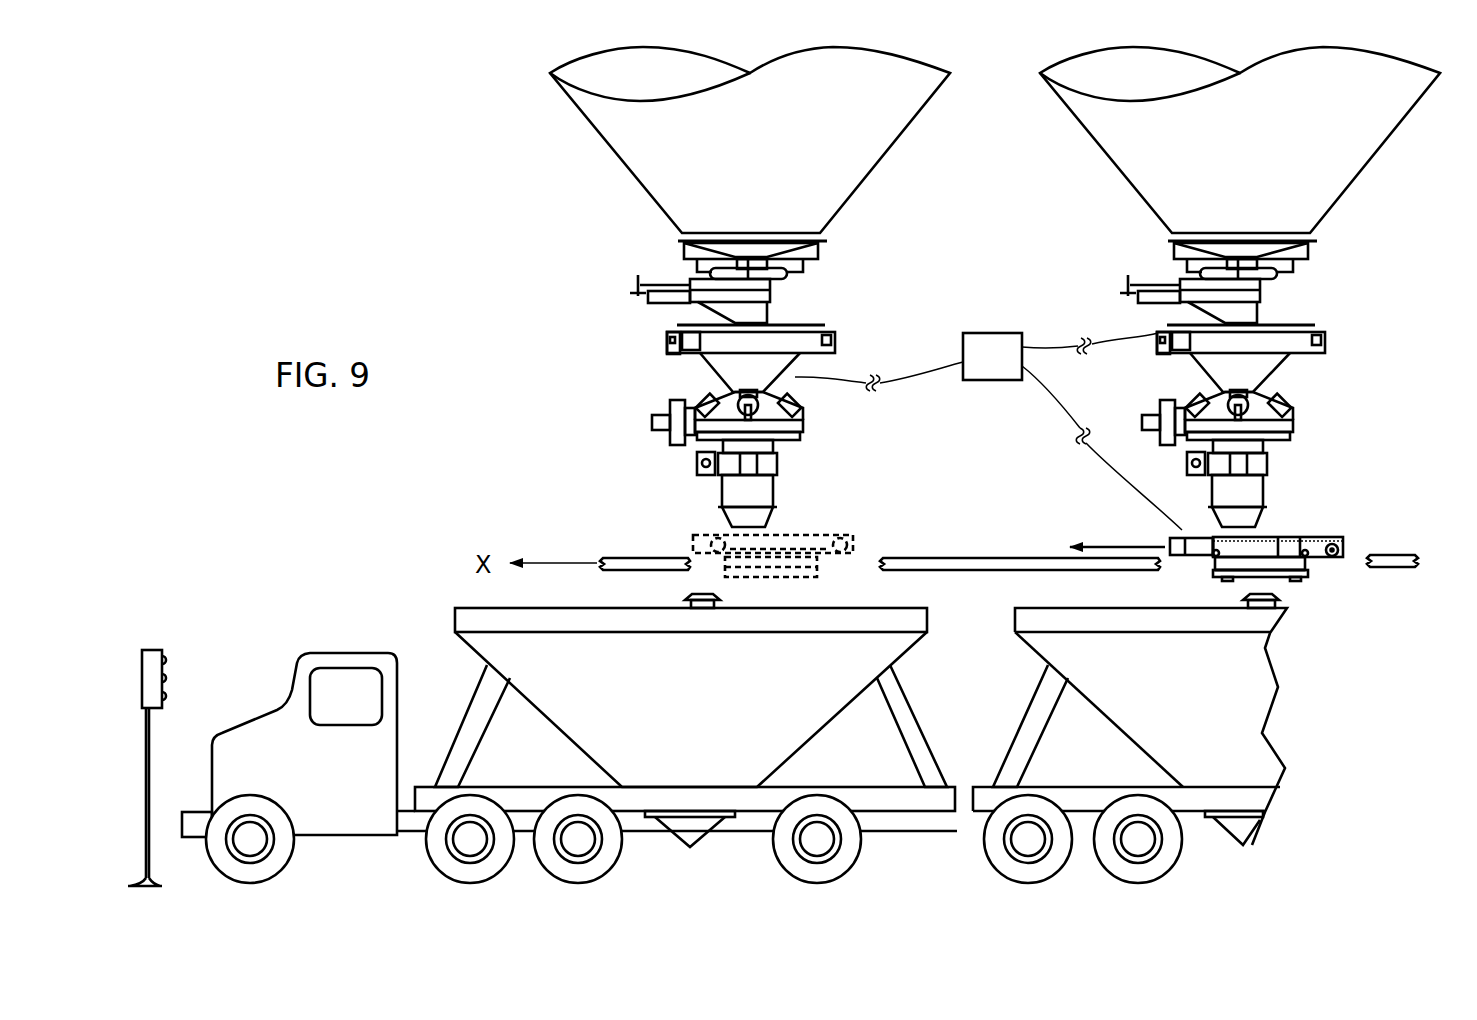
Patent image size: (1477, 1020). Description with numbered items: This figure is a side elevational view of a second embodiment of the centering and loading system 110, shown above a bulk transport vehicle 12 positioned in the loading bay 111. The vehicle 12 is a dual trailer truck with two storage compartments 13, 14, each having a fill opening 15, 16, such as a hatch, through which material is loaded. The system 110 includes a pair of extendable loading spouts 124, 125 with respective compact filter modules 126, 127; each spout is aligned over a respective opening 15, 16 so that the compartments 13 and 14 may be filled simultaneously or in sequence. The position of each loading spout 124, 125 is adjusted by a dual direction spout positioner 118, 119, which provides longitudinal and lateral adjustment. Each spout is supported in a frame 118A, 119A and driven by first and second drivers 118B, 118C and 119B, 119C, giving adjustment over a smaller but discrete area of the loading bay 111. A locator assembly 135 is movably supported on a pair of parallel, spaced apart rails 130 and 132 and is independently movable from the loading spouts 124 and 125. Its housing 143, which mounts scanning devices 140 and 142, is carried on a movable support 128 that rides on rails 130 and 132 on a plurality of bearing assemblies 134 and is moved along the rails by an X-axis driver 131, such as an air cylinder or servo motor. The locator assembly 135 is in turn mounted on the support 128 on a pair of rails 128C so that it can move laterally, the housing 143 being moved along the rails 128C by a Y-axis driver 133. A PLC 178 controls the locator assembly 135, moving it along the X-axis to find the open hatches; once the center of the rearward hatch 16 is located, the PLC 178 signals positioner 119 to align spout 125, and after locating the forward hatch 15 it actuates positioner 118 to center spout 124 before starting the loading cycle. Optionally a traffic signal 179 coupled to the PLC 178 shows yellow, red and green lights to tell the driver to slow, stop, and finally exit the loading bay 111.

The bulk transport vehicle 12 is at (282, 667).
The storage compartment 13 is at (822, 700).
The storage compartment 14 is at (1120, 702).
The fill opening 15 is at (717, 600).
The fill opening 16 is at (1280, 600).
The centering and loading system 110 is at (598, 397).
The loading bay 111 is at (497, 530).
The dual direction spout positioner 118 is at (847, 271).
The frame 118A is at (836, 340).
The first driver 118B is at (666, 333).
The second driver 118C is at (701, 350).
The dual direction spout positioner 119 is at (1240, 185).
The frame 119A is at (1290, 354).
The first driver 119B is at (1111, 327).
The second driver 119C is at (1268, 370).
The extendable loading spout 124 is at (763, 492).
The extendable loading spout 125 is at (1265, 487).
The compact filter module 126 is at (828, 414).
The compact filter module 127 is at (1265, 421).
The movable support 128 is at (852, 522).
The rails 128C is at (1305, 552).
The rail 130 is at (893, 559).
The X-axis driver 131 is at (1172, 540).
The rail 132 is at (978, 560).
The Y-axis driver 133 is at (1283, 532).
The bearing assemblies 134 is at (1340, 538).
The locator assembly 135 is at (830, 585).
The scanning device 140 is at (1270, 545).
The scanning device 142 is at (1297, 578).
The locator assembly housing 143 is at (1310, 574).
The PLC 178 is at (997, 323).
The traffic signal 179 is at (161, 626).